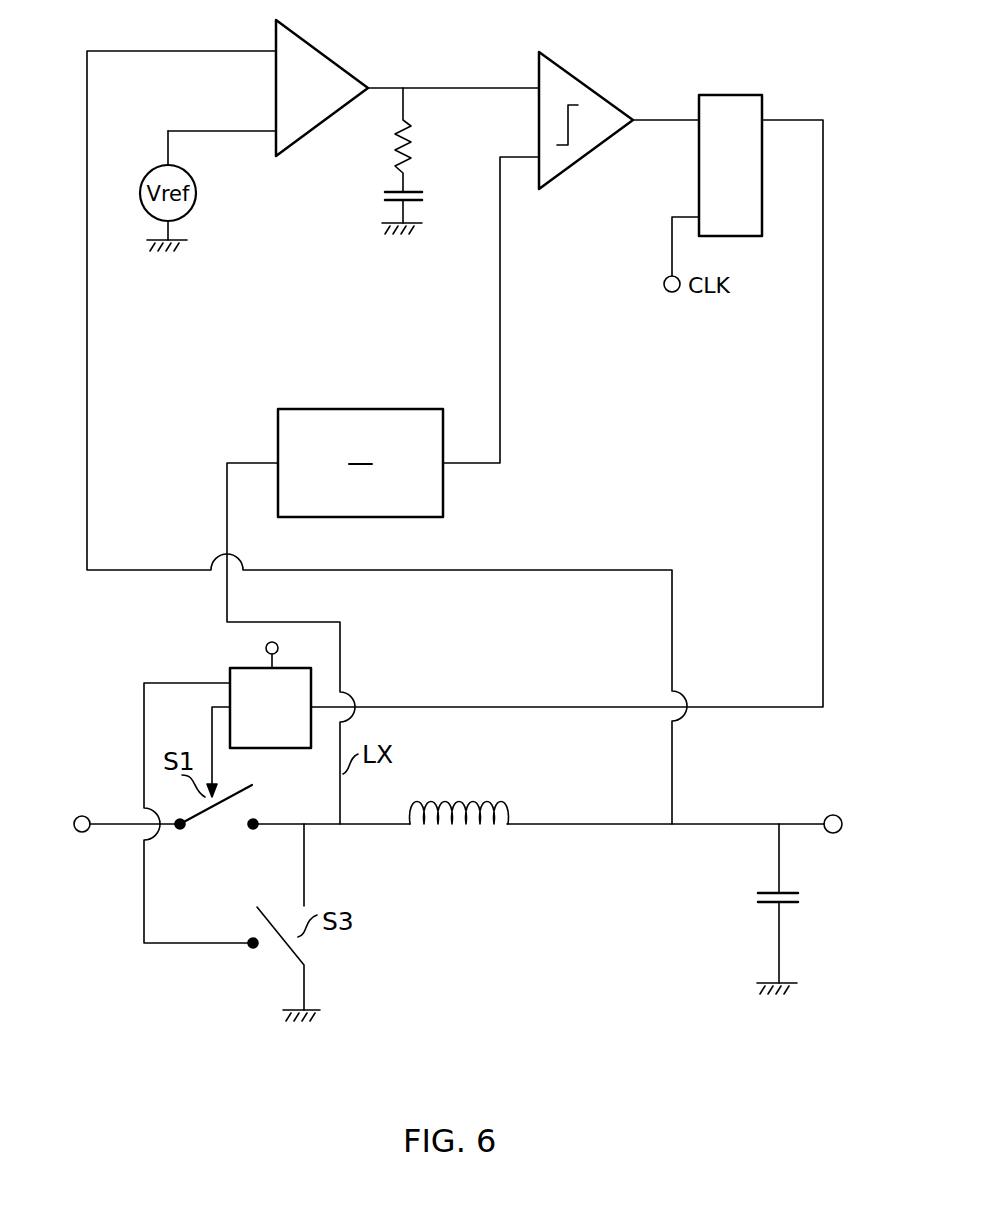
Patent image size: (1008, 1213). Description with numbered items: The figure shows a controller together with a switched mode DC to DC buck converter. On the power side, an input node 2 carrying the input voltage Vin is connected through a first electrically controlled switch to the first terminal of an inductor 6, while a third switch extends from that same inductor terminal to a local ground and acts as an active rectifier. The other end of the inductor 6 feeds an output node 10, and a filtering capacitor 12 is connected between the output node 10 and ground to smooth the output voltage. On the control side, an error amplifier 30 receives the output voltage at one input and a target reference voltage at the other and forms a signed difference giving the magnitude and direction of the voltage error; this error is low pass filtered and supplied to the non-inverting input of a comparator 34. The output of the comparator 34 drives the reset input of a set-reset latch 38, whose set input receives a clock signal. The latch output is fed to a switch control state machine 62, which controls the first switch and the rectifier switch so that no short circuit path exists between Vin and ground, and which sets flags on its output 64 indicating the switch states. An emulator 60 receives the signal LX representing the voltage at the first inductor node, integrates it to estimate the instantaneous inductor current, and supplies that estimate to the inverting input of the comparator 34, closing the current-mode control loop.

The input node 2 is at (85, 835).
The inductor 6 is at (462, 827).
The output node 10 is at (828, 815).
The filtering capacitor 12 is at (800, 897).
The error amplifier 30 is at (323, 53).
The comparator 34 is at (573, 73).
The set-reset latch 38 is at (728, 95).
The emulator 60 is at (361, 408).
The switch control state machine 62 is at (228, 671).
The output 64 is at (265, 650).